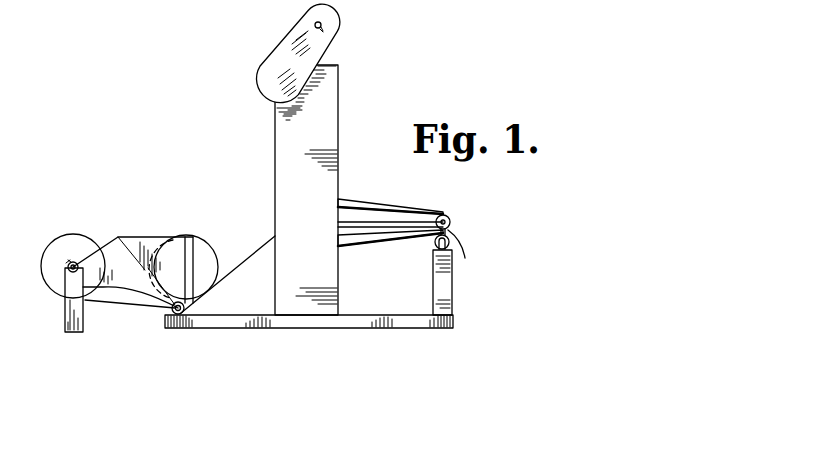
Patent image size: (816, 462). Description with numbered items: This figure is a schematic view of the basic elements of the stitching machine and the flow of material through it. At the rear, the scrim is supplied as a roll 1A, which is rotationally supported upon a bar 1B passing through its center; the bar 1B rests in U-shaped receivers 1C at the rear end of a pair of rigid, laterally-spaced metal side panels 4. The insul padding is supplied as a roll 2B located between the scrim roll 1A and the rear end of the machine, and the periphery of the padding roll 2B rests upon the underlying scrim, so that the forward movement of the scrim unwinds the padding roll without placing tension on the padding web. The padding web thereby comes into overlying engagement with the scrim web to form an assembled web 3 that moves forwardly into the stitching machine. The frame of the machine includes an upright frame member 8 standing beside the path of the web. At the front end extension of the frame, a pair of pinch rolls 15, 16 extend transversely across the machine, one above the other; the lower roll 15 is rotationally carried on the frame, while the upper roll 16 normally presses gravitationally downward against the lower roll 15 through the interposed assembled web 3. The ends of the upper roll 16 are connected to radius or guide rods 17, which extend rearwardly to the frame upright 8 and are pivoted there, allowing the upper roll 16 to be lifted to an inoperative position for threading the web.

The roll of scrim 1A is at (53, 242).
The bar 1B is at (67, 263).
The U-shaped receivers 1C is at (63, 270).
The roll of padding 2B is at (205, 238).
The assembled web 3 is at (249, 249).
The side panels 4 is at (127, 270).
The upright frame member 8 is at (314, 259).
The lower pinch roll 15 is at (436, 241).
The upper pinch roll 16 is at (451, 221).
The radius or guide rods 17 is at (359, 223).